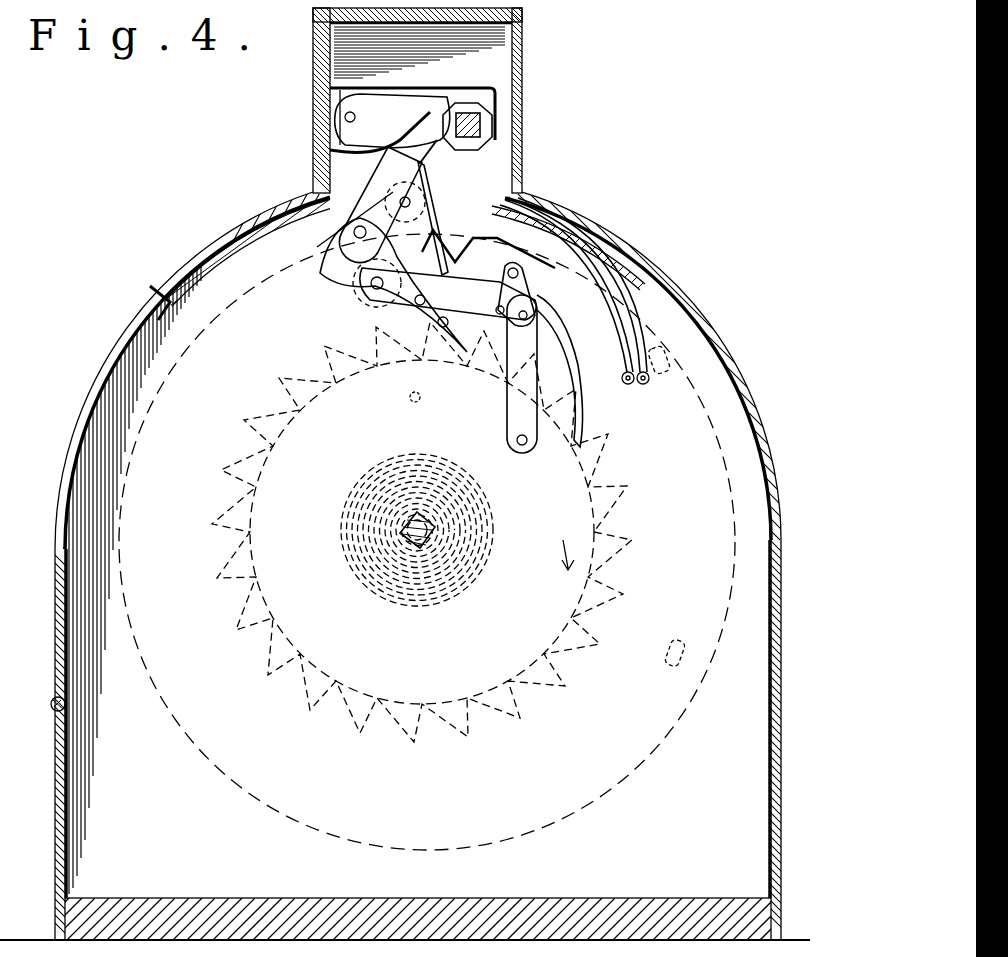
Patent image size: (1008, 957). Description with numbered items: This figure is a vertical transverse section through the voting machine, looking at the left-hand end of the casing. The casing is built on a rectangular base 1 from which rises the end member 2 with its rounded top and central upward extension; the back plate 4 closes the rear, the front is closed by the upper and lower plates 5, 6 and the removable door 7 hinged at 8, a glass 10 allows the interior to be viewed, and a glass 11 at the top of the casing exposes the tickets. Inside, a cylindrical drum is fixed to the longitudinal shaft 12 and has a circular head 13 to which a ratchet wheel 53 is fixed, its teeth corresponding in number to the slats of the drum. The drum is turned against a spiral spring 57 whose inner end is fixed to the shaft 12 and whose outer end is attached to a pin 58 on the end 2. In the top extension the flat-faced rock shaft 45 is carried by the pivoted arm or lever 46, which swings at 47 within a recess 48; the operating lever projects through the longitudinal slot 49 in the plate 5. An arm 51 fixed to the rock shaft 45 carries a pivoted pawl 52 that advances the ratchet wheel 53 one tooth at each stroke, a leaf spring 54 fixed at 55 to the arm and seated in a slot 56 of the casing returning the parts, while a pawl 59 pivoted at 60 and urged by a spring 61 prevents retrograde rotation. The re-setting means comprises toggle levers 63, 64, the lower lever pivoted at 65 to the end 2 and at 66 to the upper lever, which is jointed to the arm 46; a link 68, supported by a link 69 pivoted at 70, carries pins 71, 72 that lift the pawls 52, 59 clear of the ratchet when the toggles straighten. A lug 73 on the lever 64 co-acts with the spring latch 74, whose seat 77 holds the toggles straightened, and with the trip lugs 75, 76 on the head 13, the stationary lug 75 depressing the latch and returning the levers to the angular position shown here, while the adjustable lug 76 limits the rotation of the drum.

The base 1 is at (172, 898).
The end member 2 is at (742, 447).
The back plate 4 is at (733, 362).
The upper front plate 5 is at (313, 66).
The lower front plate 6 is at (67, 820).
The removable door 7 is at (108, 362).
The hinge 8 is at (54, 700).
The glass 10 is at (232, 244).
The top glass 11 is at (522, 14).
The longitudinal shaft 12 is at (412, 542).
The drum head 13 is at (727, 497).
The rock shaft 45 is at (482, 124).
The arm or lever 46 is at (415, 105).
The pivot 47 is at (345, 118).
The recess 48 is at (370, 90).
The longitudinal slot 49 is at (338, 95).
The arm 51 is at (345, 222).
The dog or pawl 52 is at (465, 357).
The ratchet wheel 53 is at (214, 512).
The leaf spring 54 is at (380, 205).
The fixing point 55 is at (470, 102).
The slot 56 is at (313, 153).
The spiral spring 57 is at (355, 510).
The pin 58 is at (412, 404).
The dog or pawl 59 is at (638, 386).
The pivot 60 is at (582, 235).
The spring 61 is at (610, 334).
The toggle lever 63 is at (447, 187).
The toggle lever 64 is at (385, 285).
The pivot 65 is at (420, 367).
The pivot 66 is at (353, 234).
The link 68 is at (501, 292).
The supporting link 69 is at (508, 404).
The pivot 70 is at (522, 446).
The pin 71 is at (398, 314).
The pin 72 is at (484, 346).
The lug 73 is at (466, 248).
The spring latch 74 is at (620, 267).
The trip lug 75 is at (668, 360).
The adjustable trip lug 76 is at (672, 644).
The seat 77 is at (548, 214).